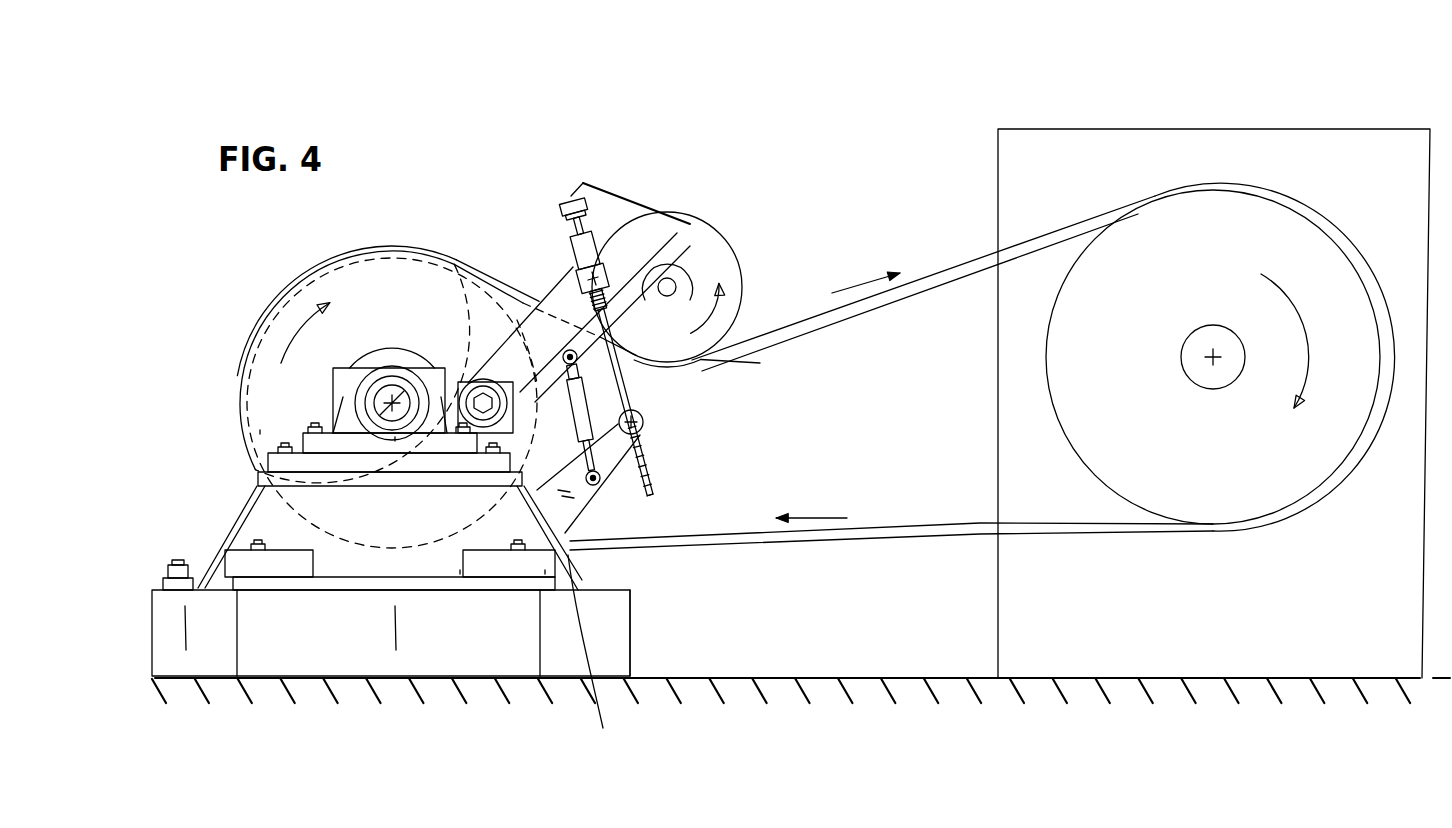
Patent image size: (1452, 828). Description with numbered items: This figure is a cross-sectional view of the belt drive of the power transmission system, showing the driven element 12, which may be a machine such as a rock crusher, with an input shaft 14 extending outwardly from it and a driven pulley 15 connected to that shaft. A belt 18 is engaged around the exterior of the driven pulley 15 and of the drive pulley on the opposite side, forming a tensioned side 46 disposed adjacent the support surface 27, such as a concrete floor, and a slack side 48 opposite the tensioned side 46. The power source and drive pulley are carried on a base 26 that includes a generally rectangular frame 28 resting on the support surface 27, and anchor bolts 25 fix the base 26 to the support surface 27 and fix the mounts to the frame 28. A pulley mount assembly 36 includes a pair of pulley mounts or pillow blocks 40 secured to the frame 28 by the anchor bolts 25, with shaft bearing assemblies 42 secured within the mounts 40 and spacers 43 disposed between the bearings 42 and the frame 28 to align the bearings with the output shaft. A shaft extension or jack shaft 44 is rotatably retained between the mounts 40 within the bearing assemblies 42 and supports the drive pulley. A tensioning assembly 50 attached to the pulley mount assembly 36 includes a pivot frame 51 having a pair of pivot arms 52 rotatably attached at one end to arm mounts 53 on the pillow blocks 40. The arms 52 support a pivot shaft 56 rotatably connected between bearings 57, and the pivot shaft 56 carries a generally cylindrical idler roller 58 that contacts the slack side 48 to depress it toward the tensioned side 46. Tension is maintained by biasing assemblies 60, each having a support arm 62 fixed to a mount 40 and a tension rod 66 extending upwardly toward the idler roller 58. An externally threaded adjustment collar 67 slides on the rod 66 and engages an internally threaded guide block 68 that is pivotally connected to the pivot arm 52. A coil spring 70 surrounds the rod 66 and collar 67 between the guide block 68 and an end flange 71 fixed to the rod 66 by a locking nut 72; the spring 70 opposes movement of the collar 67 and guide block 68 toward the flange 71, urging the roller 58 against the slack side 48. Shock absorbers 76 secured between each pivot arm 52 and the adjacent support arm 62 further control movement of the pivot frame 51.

The driven element 12 is at (1067, 129).
The input shaft 14 is at (1213, 325).
The driven pulley 15 is at (1170, 190).
The belt 18 is at (968, 258).
The anchor bolts 25 is at (255, 542).
The base 26 is at (652, 606).
The support surface 27 is at (780, 678).
The rectangular frame 28 is at (632, 632).
The pulley mount assembly 36 is at (308, 399).
The pulley mounts 40 is at (372, 402).
The shaft bearing assemblies 42 is at (388, 398).
The spacers 43 is at (278, 464).
The shaft extension 44 is at (330, 383).
The tensioned side 46 is at (870, 525).
The slack side 48 is at (845, 318).
The tensioning assembly 50 is at (626, 150).
The pivot frame 51 is at (641, 192).
The pivot arms 52 is at (540, 300).
The arm mounts 53 is at (600, 660).
The pivot shaft 56 is at (629, 321).
The bearings 57 is at (680, 280).
The idler roller 58 is at (712, 235).
The biasing assemblies 60 is at (663, 449).
The support arm 62 is at (588, 510).
The tension rod 66 is at (655, 493).
The adjustment collar 67 is at (680, 300).
The guide block 68 is at (566, 265).
The spring 70 is at (647, 208).
The end flange 71 is at (570, 207).
The locking nut 72 is at (571, 197).
The shock absorbers 76 is at (570, 408).